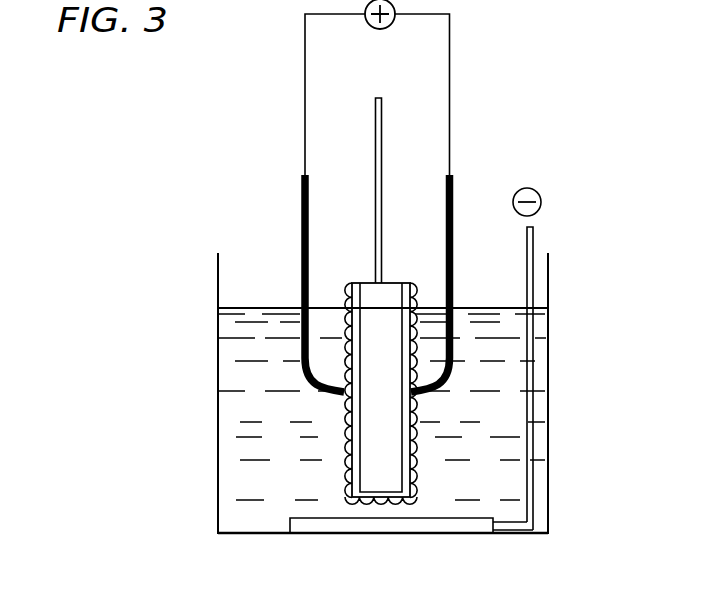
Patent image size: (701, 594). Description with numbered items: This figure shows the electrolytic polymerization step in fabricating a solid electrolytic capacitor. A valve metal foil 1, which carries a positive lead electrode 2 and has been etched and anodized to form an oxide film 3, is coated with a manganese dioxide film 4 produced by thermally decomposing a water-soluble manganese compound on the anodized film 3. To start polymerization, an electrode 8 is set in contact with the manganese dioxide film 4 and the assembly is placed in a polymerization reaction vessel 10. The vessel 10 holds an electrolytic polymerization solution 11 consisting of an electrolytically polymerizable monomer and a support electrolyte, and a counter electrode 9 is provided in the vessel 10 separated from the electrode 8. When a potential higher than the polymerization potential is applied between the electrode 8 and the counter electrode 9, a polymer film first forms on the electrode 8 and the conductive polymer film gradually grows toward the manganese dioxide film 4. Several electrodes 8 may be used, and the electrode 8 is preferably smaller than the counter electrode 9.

The valve metal foil 1 is at (388, 298).
The positive lead electrode 2 is at (383, 127).
The oxide film 3 is at (345, 490).
The manganese dioxide film 4 is at (345, 433).
The electrode 8 is at (301, 226).
The counter electrode 9 is at (462, 525).
The polymerization reaction vessel 10 is at (550, 378).
The electrolytic polymerization solution 11 is at (235, 406).